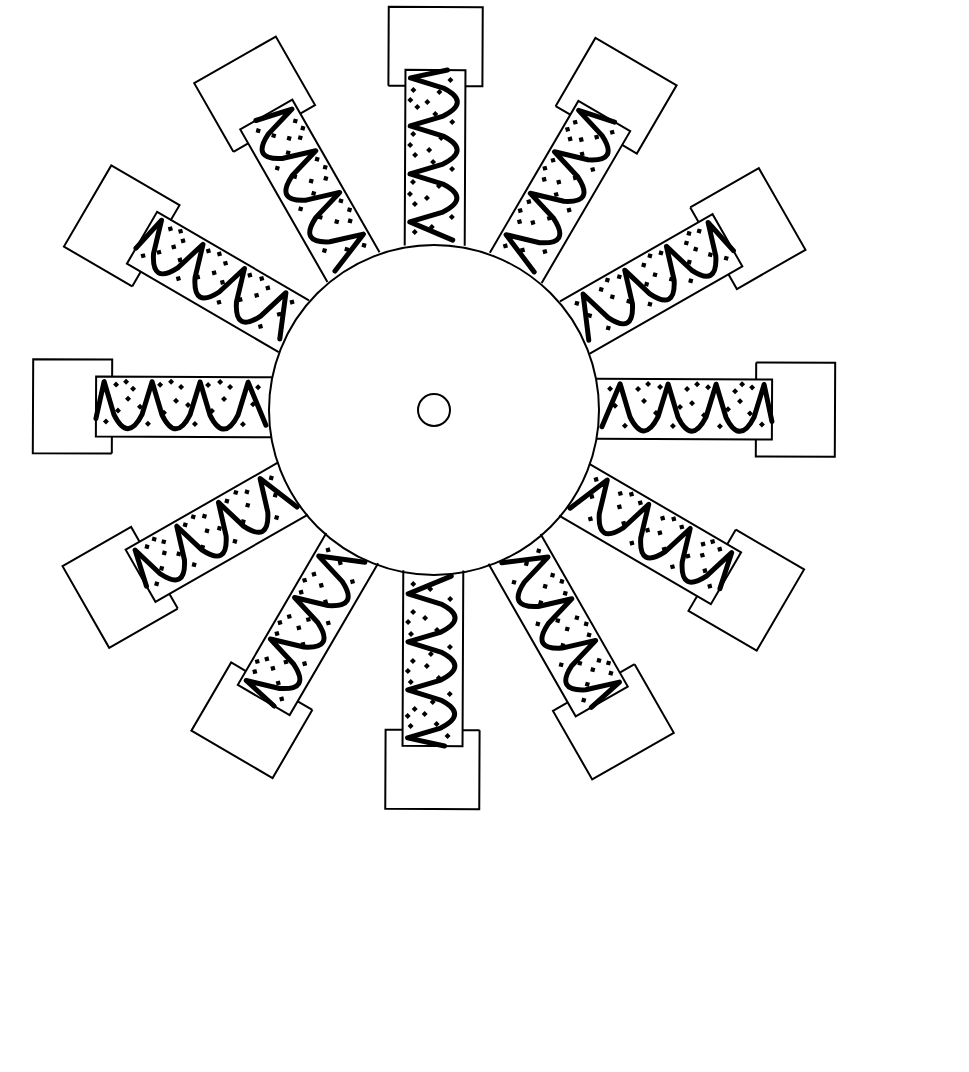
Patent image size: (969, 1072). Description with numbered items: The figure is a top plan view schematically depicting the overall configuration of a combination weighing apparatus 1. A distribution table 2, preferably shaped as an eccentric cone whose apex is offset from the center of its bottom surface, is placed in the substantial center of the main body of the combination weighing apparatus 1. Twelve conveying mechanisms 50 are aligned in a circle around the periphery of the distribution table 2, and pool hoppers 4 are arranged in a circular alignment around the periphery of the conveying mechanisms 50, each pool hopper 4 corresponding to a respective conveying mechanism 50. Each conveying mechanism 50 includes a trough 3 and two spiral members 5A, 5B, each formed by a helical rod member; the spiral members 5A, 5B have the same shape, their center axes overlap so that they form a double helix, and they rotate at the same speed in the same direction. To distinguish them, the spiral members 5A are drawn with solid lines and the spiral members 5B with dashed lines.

The combination weighing apparatus 1 is at (93, 64).
The distribution table 2 is at (532, 305).
The trough 3 is at (608, 648).
The pool hopper 4 is at (617, 730).
The spiral member 5A is at (658, 437).
The spiral member 5B is at (663, 380).
The conveying mechanism 50 is at (723, 521).